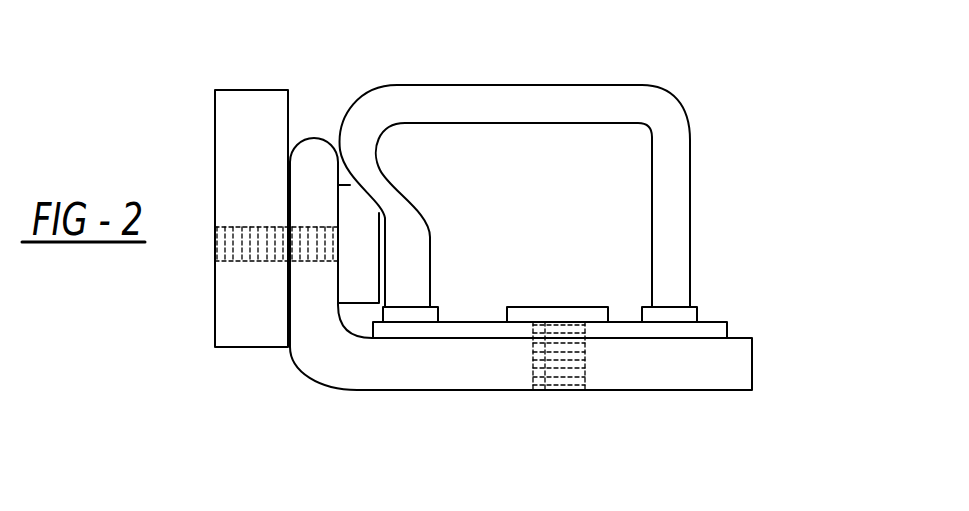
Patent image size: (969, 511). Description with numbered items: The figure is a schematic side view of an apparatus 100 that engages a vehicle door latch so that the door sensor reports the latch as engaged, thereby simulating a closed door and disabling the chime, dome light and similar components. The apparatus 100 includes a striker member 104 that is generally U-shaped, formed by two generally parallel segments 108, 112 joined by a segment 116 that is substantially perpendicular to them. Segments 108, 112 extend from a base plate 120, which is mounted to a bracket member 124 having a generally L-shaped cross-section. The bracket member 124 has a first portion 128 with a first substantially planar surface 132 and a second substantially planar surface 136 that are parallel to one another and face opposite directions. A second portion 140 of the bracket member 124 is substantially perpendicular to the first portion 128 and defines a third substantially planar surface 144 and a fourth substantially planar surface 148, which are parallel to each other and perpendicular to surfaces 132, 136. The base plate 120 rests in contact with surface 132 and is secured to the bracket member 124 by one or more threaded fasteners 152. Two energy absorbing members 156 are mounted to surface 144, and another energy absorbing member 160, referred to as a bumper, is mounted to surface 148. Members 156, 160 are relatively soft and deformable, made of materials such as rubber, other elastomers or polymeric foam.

The apparatus 100 is at (183, 81).
The striker member 104 is at (490, 98).
The segment 108 is at (675, 232).
The segment 112 is at (430, 257).
The segment 116 is at (618, 96).
The base plate 120 is at (715, 327).
The bracket member 124 is at (668, 363).
The first portion 128 is at (732, 370).
The first substantially planar surface 132 is at (452, 338).
The second substantially planar surface 136 is at (625, 392).
The second portion 140 is at (315, 152).
The third substantially planar surface 144 is at (338, 201).
The fourth substantially planar surface 148 is at (288, 298).
The threaded fastener 152 is at (556, 368).
The energy absorbing member 156 is at (361, 285).
The energy absorbing member 160 is at (245, 163).